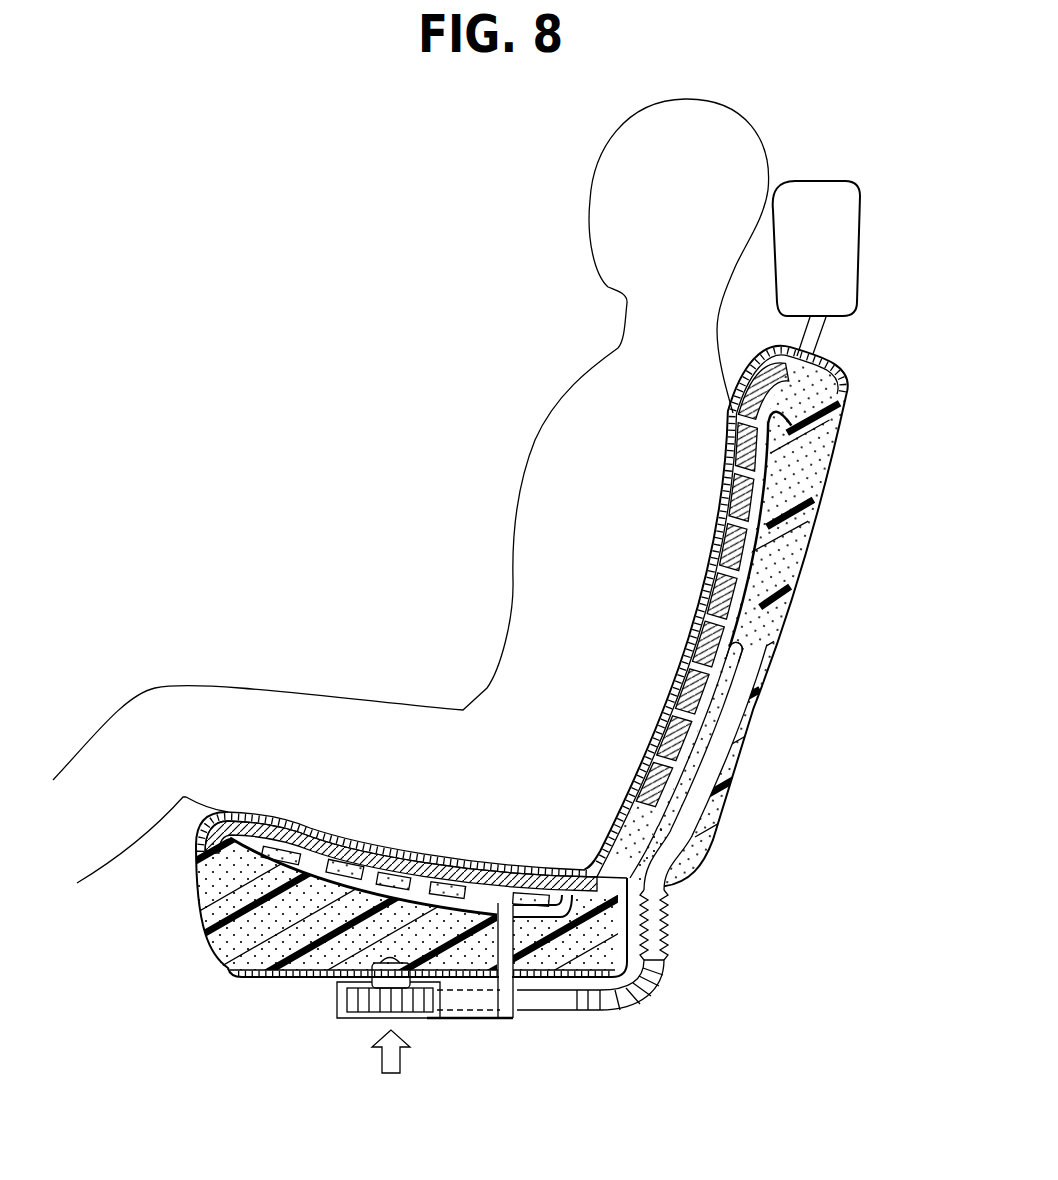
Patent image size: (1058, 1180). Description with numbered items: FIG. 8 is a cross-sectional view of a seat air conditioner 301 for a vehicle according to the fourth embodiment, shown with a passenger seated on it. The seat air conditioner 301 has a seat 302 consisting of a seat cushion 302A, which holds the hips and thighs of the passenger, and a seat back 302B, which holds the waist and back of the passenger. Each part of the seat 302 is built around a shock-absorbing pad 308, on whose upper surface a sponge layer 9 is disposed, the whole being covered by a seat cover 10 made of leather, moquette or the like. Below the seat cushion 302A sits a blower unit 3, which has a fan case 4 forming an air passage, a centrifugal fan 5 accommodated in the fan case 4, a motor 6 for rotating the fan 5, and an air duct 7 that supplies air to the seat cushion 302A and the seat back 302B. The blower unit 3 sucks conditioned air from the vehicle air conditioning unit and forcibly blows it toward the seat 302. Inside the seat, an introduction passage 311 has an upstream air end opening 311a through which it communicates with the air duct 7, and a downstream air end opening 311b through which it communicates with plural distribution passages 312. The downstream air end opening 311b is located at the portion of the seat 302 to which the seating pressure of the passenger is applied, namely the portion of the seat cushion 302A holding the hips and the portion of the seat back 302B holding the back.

The blower unit 3 is at (463, 1041).
The fan case 4 is at (340, 1000).
The centrifugal fan 5 is at (373, 1010).
The motor 6 is at (400, 980).
The air duct 7 is at (537, 1017).
The sponge layer 9 is at (770, 427).
The seat cover 10 is at (756, 362).
The seat air conditioner 301 is at (683, 1015).
The seat 302 is at (519, 661).
The seat cushion 302A is at (200, 914).
The seat back 302B is at (843, 358).
The foam pad 308 is at (807, 483).
The introduction passage 311 is at (728, 727).
The upstream air end opening 311a is at (650, 880).
The downstream air end opening 311b is at (737, 637).
The distribution passages 312 is at (747, 568).